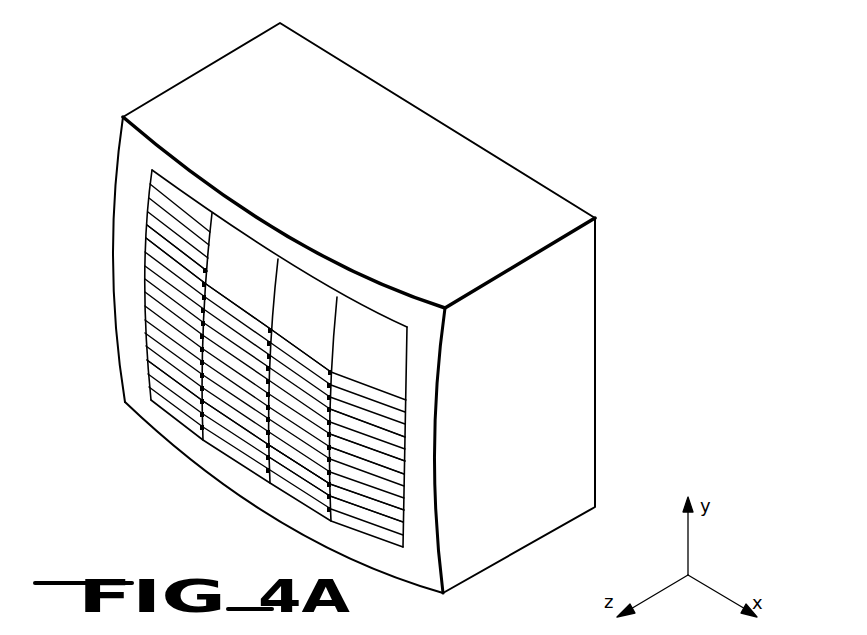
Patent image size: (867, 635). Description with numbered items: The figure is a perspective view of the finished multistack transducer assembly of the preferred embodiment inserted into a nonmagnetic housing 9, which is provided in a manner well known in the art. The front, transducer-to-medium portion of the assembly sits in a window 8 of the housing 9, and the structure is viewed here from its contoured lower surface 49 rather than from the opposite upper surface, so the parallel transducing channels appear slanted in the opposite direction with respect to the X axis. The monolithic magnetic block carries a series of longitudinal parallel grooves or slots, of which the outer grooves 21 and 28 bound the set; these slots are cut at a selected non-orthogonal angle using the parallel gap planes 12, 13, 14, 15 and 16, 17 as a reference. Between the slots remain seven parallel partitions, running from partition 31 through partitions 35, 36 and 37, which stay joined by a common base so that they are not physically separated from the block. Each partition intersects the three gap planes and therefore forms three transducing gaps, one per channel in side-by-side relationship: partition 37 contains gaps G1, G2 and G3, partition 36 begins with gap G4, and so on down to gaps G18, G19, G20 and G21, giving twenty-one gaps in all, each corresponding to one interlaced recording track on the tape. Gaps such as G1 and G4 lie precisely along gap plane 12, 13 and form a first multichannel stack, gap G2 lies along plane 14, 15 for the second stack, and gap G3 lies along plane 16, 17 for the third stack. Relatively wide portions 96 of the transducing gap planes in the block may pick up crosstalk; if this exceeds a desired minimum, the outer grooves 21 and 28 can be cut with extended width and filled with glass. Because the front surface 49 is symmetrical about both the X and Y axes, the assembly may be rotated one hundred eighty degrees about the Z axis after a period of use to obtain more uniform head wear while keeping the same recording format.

The nonmagnetic housing 9 is at (215, 65).
The window 8 is at (436, 375).
The groove 28 is at (150, 175).
The groove 21 is at (148, 355).
The contoured lower surface 49 is at (163, 391).
The partition 31 is at (404, 545).
The partition 35 is at (402, 473).
The partition 36 is at (402, 452).
The partition 37 is at (402, 431).
The gap plane 12 is at (249, 314).
The gap plane 13 is at (213, 220).
The gap plane 14 is at (320, 354).
The gap plane 15 is at (279, 262).
The gap plane 16 is at (384, 389).
The gap plane 17 is at (339, 299).
The wide portions of transducing gap planes 96 is at (210, 215).
The transducing gap G1 is at (208, 269).
The transducing gap G2 is at (273, 333).
The transducing gap G3 is at (341, 378).
The transducing gap G4 is at (206, 286).
The transducing gap G18 is at (328, 480).
The transducing gap G19 is at (193, 393).
The transducing gap G20 is at (263, 450).
The transducing gap G21 is at (335, 510).